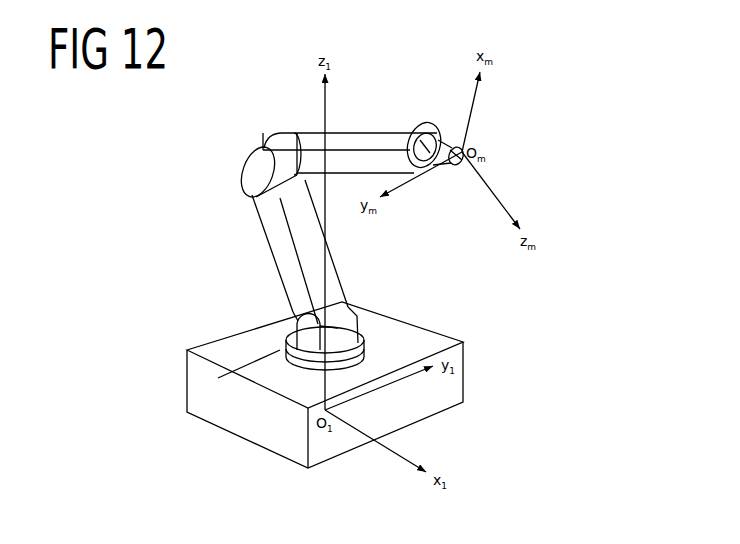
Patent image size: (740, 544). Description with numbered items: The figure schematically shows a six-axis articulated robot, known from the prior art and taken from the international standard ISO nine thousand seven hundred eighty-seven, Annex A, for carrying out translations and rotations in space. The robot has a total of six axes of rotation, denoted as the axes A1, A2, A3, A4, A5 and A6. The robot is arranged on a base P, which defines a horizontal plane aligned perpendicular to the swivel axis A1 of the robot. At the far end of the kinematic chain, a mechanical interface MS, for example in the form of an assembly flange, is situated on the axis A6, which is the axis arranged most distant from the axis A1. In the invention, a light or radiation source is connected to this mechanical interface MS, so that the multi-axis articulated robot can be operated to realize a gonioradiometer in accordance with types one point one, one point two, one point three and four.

The swivel axis A1 is at (283, 360).
The axis of rotation A2 is at (400, 293).
The axis of rotation A3 is at (257, 167).
The axis of rotation A4 is at (361, 165).
The axis of rotation A5 is at (477, 125).
The axis of rotation A6 is at (488, 179).
The mechanical interface MS is at (454, 168).
The base P is at (437, 383).